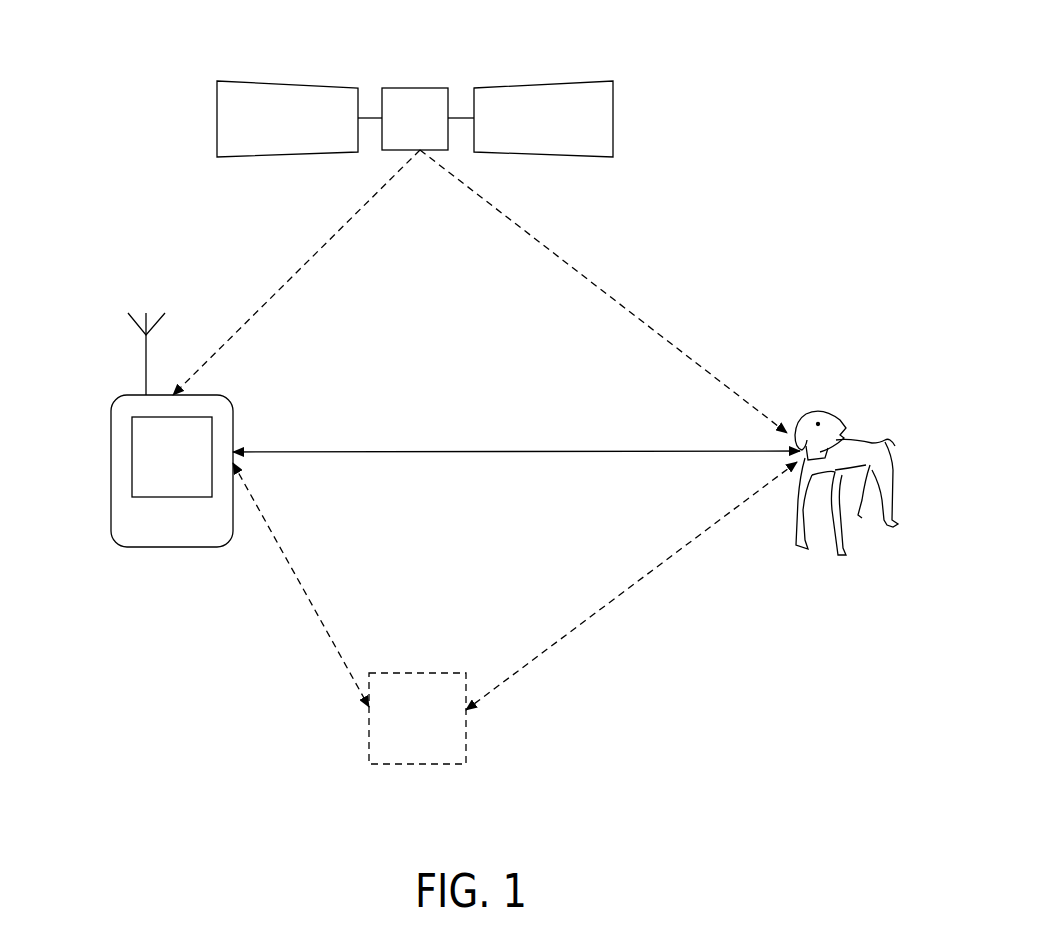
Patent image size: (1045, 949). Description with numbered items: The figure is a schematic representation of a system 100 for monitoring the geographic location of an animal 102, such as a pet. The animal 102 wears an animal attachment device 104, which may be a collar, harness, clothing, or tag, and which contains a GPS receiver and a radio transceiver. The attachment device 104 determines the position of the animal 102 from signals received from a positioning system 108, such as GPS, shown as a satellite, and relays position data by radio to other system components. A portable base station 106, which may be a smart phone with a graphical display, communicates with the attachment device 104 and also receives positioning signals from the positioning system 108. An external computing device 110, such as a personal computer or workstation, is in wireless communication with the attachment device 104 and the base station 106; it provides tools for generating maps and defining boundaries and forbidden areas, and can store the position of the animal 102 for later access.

The system 100 is at (692, 283).
The animal 102 is at (880, 444).
The animal attachment device 104 is at (805, 455).
The portable base station 106 is at (111, 450).
The positioning system 108 is at (413, 88).
The external computing device 110 is at (438, 731).